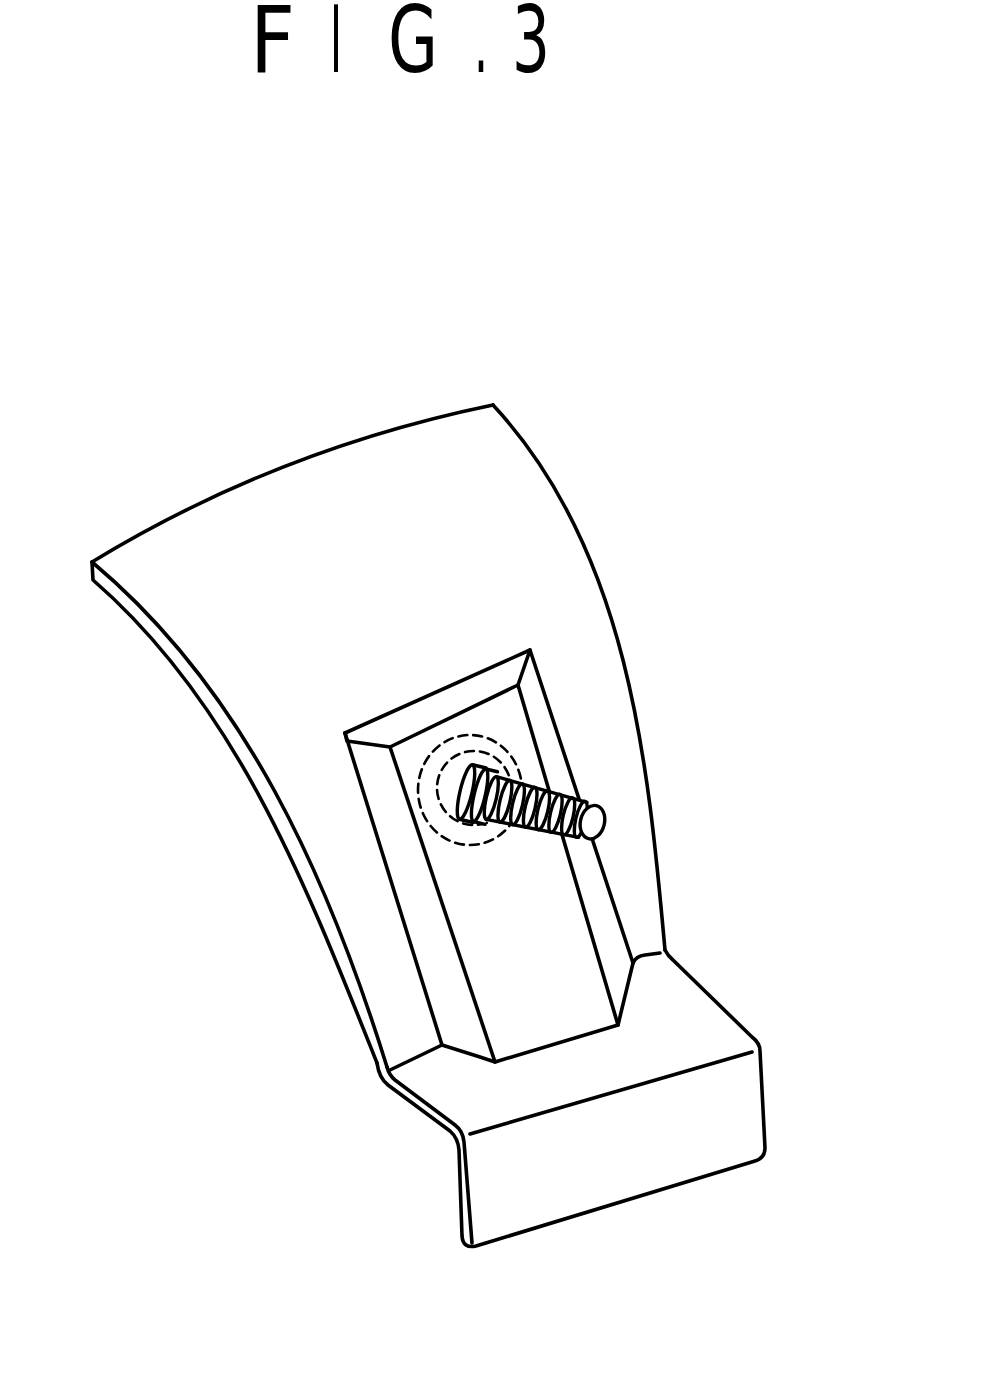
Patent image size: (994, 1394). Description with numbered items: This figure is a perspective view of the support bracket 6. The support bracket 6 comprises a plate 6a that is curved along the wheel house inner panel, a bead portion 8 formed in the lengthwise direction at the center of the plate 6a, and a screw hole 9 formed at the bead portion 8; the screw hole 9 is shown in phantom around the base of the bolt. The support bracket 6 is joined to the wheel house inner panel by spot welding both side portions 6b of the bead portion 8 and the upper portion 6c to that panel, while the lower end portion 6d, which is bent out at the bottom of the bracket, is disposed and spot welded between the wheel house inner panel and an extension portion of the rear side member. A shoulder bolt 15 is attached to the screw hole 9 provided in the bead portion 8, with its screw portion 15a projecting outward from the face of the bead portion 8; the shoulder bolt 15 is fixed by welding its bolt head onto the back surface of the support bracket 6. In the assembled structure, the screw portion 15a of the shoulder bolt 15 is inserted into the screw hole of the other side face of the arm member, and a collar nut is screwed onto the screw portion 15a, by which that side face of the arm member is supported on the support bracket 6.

The support bracket 6 is at (553, 480).
The plate 6a is at (428, 632).
The side portions 6b is at (390, 1018).
The upper portion 6c is at (250, 542).
The lower end portion 6d is at (702, 1158).
The bead portion 8 is at (512, 720).
The screw hole 9 is at (462, 805).
The shoulder bolt 15 is at (587, 797).
The screw portion 15a is at (590, 799).